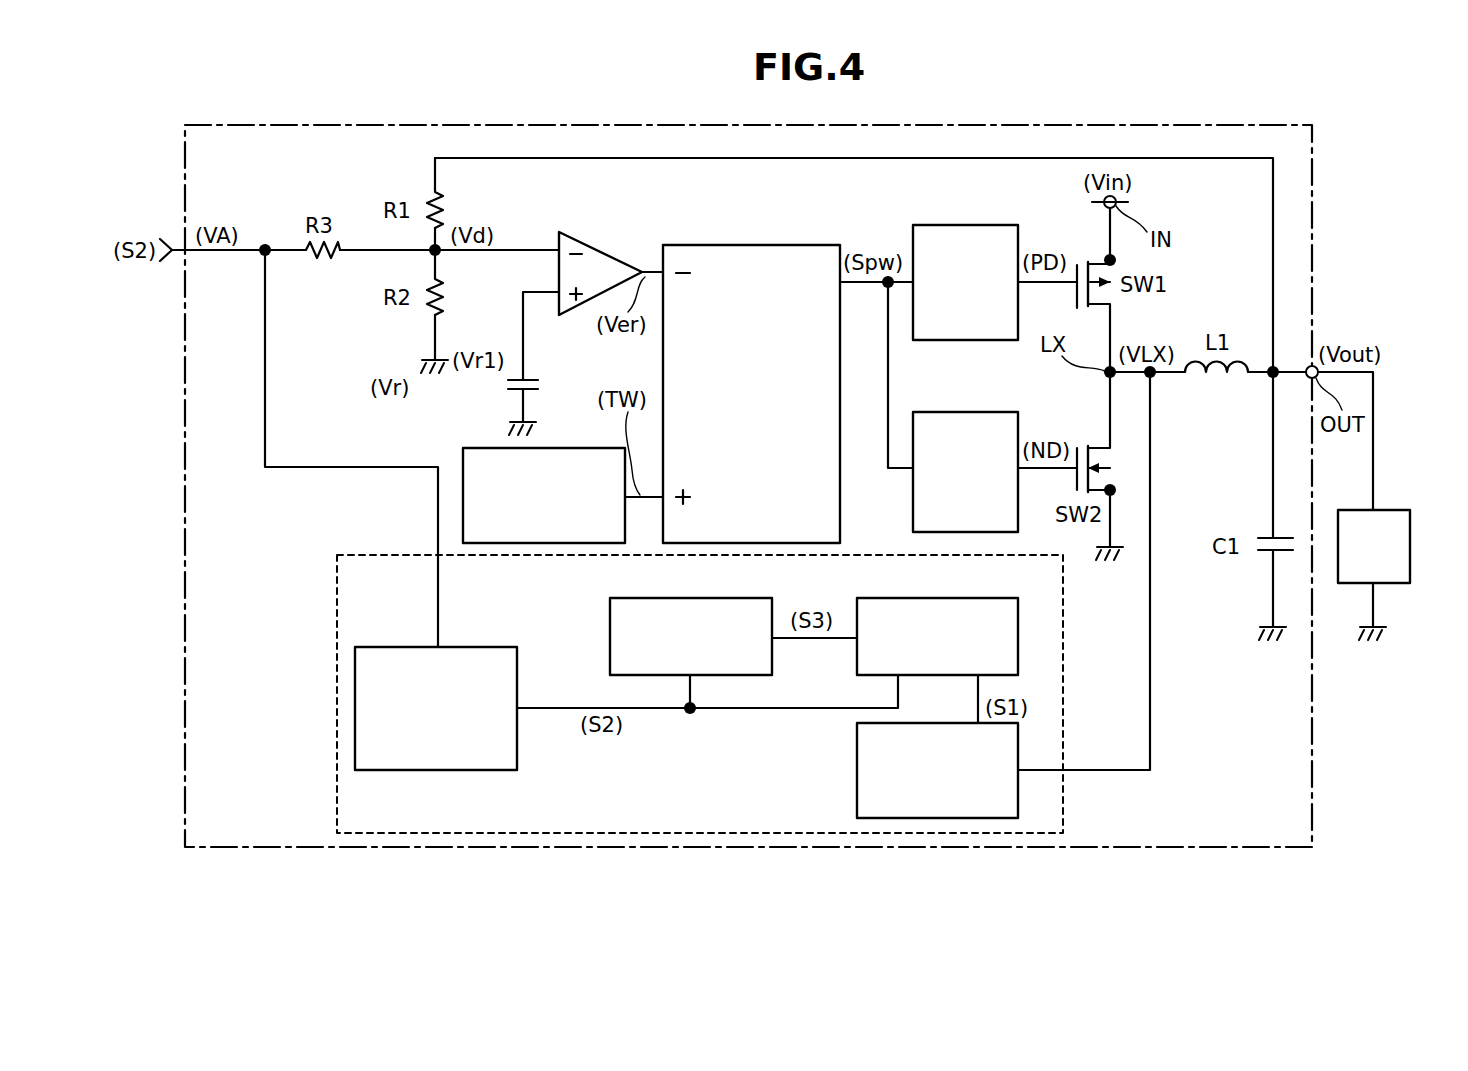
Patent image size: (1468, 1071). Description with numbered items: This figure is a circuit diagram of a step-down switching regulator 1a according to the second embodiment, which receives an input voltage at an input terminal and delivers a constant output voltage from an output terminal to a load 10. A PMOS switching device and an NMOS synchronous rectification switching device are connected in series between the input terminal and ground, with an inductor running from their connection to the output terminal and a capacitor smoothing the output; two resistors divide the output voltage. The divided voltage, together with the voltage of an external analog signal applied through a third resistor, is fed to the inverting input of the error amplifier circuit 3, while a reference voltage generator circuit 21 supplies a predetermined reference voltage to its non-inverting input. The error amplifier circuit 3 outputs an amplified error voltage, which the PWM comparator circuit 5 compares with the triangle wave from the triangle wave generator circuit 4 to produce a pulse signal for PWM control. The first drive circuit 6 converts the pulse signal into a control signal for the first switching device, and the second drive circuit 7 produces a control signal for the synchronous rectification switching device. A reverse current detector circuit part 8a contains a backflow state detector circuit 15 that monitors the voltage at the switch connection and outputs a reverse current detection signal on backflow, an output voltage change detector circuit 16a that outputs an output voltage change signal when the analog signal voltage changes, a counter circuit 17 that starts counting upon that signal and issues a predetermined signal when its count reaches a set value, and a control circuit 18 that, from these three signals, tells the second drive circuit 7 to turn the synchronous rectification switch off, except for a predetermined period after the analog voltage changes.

The switching regulator 1a is at (1130, 126).
The error amplifier circuit 3 is at (585, 243).
The triangle wave generator circuit 4 is at (545, 449).
The PWM comparator circuit 5 is at (765, 246).
The first drive circuit 6 is at (995, 225).
The second drive circuit 7 is at (995, 412).
The reverse current detector circuit part 8a is at (330, 680).
The load 10 is at (1385, 510).
The backflow state detector circuit 15 is at (857, 768).
The output voltage change detector circuit 16a is at (478, 647).
The counter circuit 17 is at (690, 598).
The control circuit 18 is at (937, 598).
The reference voltage generator circuit 21 is at (512, 388).